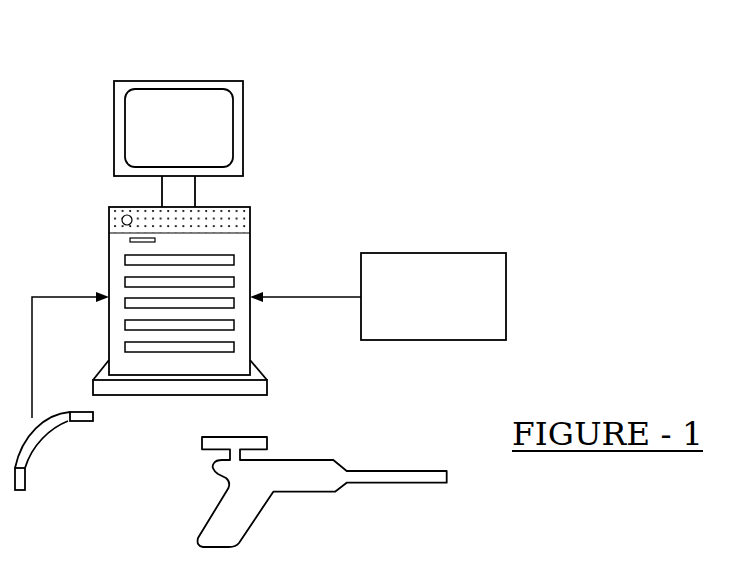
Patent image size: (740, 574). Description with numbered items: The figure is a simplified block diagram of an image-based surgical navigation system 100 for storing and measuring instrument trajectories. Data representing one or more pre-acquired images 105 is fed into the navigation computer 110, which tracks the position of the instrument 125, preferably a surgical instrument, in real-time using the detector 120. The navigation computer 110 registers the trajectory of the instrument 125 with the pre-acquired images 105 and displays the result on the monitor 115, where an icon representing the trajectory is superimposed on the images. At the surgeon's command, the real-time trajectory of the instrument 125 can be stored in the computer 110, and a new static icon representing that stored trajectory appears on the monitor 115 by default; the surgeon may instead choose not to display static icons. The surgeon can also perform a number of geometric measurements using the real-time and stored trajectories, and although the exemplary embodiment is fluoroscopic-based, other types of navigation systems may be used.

The image-based surgical navigation system 100 is at (124, 61).
The pre-acquired images 105 is at (506, 263).
The navigation computer 110 is at (250, 225).
The monitor 115 is at (243, 138).
The detector 120 is at (45, 445).
The instrument 125 is at (392, 440).